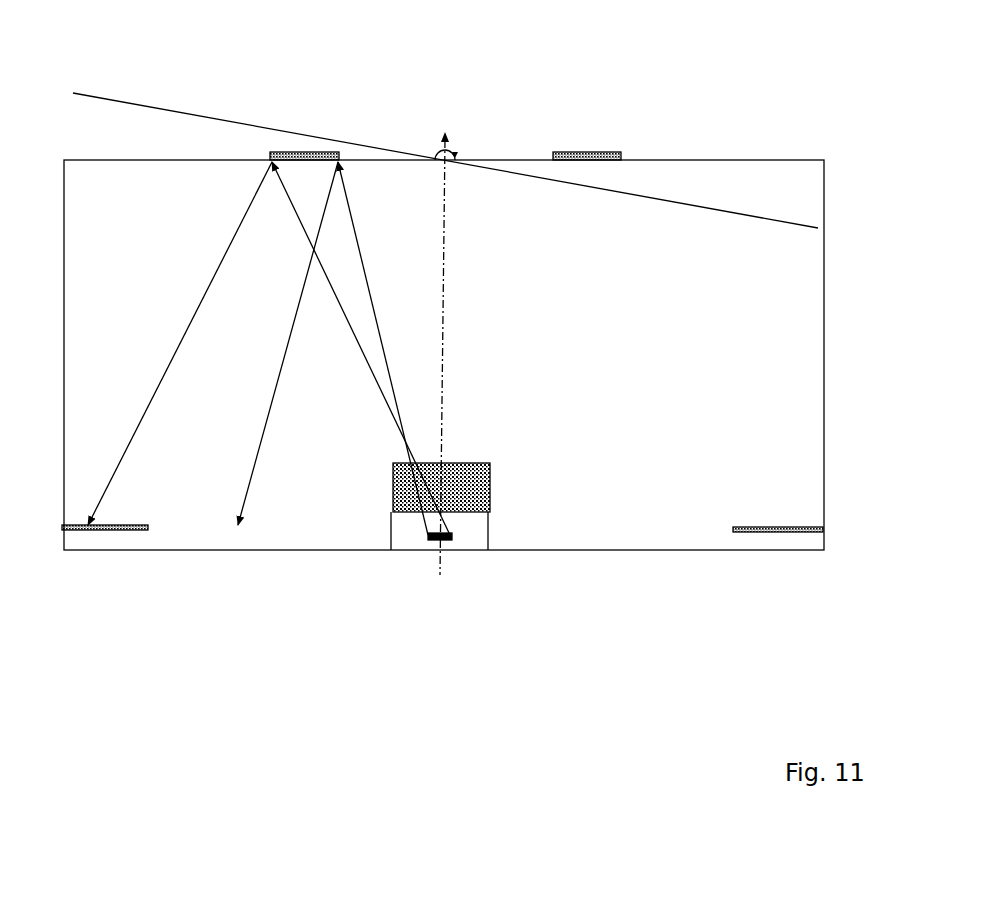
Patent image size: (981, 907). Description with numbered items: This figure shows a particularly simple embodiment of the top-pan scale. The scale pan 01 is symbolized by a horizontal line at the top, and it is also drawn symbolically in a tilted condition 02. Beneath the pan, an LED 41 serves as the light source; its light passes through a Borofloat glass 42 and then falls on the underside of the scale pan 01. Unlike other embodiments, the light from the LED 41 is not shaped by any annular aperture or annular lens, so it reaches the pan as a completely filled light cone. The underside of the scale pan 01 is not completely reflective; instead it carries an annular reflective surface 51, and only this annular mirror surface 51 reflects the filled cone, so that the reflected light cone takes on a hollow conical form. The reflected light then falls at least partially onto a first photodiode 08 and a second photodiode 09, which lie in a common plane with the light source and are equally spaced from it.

The scale pan 01 is at (721, 160).
The tilted condition of the scale pan 02 is at (104, 97).
The annular reflective surface 51 is at (595, 152).
The Borofloat glass 42 is at (480, 495).
The LED 41 is at (428, 542).
The first photodiode 08 is at (75, 530).
The second photodiode 09 is at (766, 533).